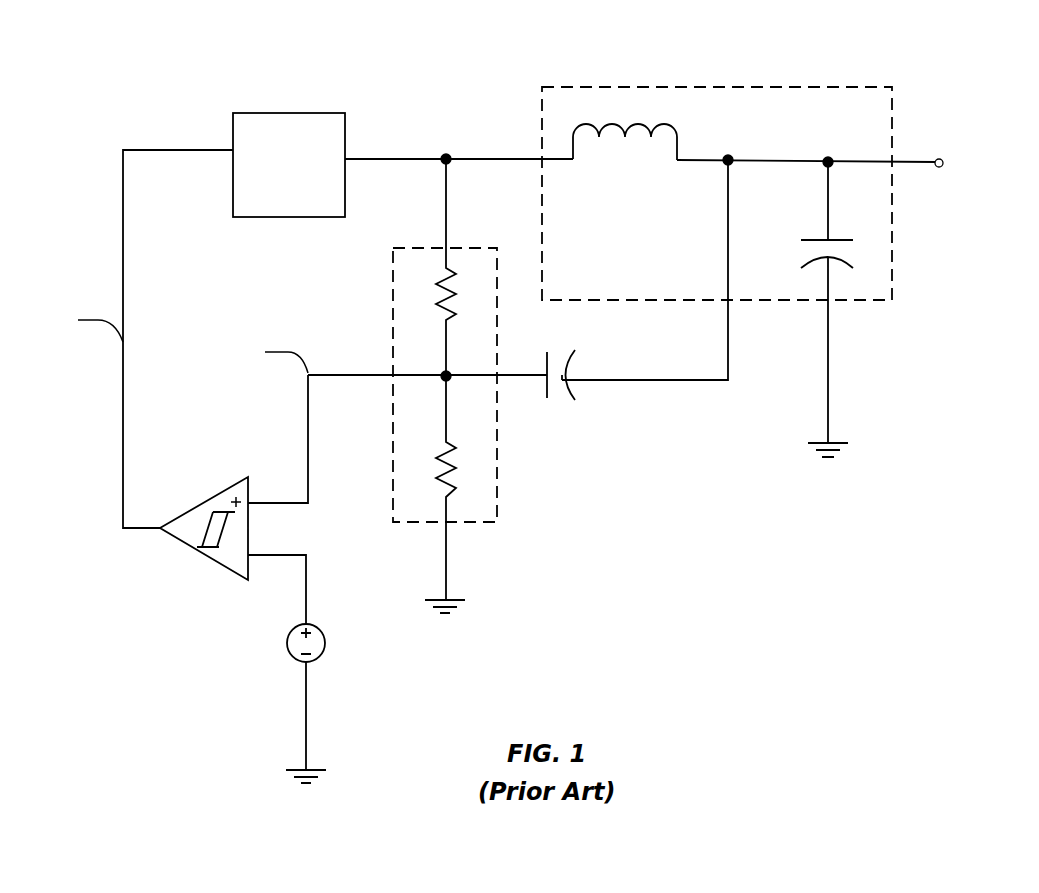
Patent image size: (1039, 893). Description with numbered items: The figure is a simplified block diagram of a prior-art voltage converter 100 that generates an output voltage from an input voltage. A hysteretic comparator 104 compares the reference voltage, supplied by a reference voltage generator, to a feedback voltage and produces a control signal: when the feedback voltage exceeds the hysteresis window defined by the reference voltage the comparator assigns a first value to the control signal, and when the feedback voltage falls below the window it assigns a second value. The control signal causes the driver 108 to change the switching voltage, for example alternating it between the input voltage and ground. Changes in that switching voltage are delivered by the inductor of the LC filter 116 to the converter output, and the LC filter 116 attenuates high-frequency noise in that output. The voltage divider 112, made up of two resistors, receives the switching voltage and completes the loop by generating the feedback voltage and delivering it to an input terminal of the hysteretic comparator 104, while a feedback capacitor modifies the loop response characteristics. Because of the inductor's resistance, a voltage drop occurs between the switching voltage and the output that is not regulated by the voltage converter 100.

The voltage converter 100 is at (790, 30).
The hysteretic comparator 104 is at (170, 540).
The driver 108 is at (233, 128).
The voltage divider 112 is at (393, 287).
The LC filter 116 is at (640, 86).